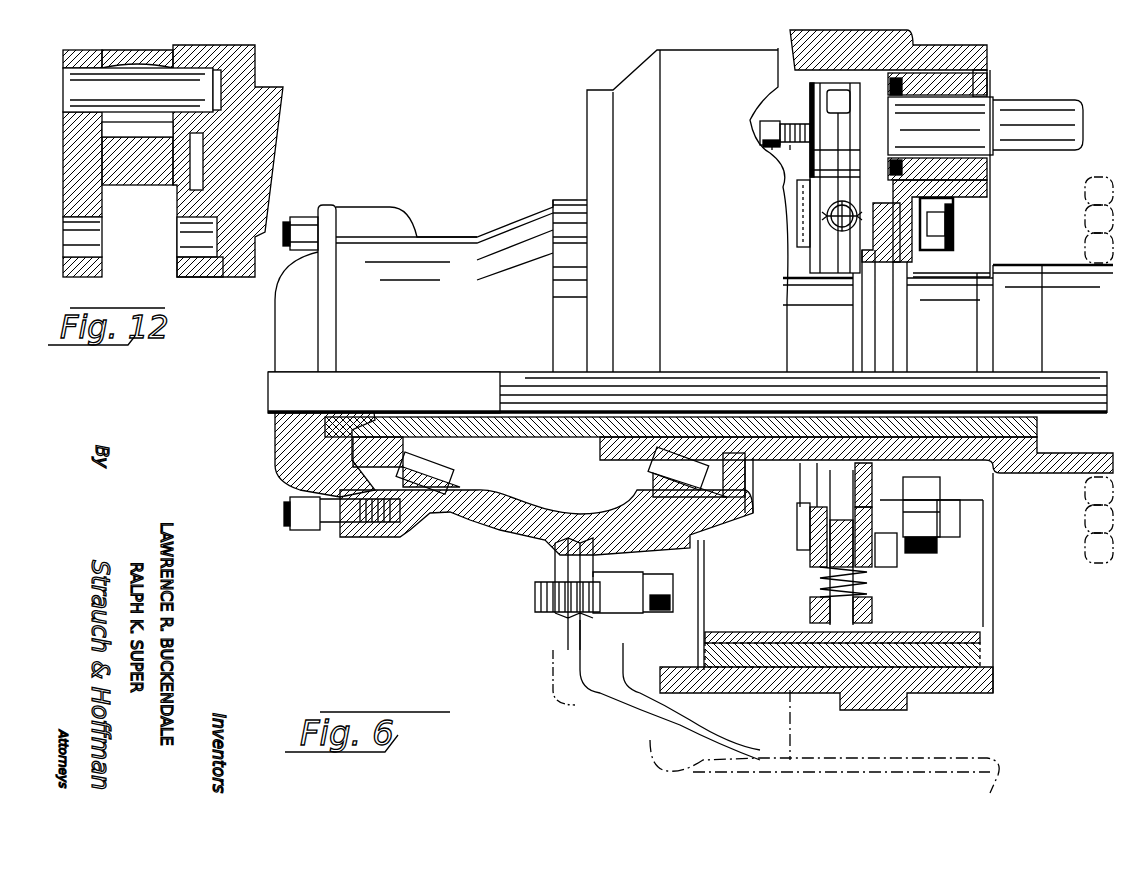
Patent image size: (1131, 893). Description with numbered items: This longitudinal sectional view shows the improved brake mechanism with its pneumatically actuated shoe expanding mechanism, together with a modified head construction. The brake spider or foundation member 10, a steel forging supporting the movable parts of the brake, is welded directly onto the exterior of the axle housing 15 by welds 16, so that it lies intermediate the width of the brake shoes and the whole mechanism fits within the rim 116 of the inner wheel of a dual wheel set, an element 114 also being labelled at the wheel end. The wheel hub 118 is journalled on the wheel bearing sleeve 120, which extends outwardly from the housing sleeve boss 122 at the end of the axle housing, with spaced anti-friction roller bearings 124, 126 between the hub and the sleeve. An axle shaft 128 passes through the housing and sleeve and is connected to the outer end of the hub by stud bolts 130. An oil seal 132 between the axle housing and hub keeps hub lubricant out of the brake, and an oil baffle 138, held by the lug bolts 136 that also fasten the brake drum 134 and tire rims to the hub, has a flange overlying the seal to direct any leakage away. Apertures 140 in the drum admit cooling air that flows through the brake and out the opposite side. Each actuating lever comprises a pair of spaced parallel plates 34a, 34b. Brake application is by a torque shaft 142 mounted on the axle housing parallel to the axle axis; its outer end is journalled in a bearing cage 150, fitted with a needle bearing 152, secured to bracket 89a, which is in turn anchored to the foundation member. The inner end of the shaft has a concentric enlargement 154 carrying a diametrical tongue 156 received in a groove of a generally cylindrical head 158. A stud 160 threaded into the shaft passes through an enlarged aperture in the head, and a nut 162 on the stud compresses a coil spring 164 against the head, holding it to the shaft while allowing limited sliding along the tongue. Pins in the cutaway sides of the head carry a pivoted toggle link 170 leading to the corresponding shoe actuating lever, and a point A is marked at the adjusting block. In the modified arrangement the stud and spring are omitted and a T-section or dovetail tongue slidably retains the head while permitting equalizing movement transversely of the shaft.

In FIG. 6, the foundation member 10 is at (885, 568).
In FIG. 6, the axle housing 15 is at (1050, 474).
In FIG. 6, the welds 16 is at (860, 342).
In FIG. 6, the lever plate 34a is at (810, 608).
In FIG. 6, the lever plate 34b is at (873, 607).
In FIG. 6, the bracket 89a is at (943, 204).
In FIG. 6, the wheel hub 114 is at (1027, 272).
In FIG. 6, the rim 116 is at (838, 768).
In FIG. 6, the wheel hub 118 is at (515, 527).
In FIG. 6, the wheel bearing sleeve 120 is at (542, 438).
In FIG. 6, the housing sleeve boss 122 is at (793, 490).
In FIG. 6, the roller bearing 124 is at (652, 456).
In FIG. 6, the roller bearing 126 is at (408, 473).
In FIG. 6, the axle shaft 128 is at (288, 362).
In FIG. 6, the stud bolts 130 is at (782, 58).
In FIG. 6, the oil seal 132 is at (747, 502).
In FIG. 6, the brake drum 134 is at (672, 720).
In FIG. 6, the lug bolts 136 is at (547, 617).
In FIG. 6, the oil baffle 138 is at (728, 528).
In FIG. 6, the apertures 140 is at (640, 657).
In FIG. 12, the torque shaft 142 is at (318, 90).
In FIG. 6, the torque shaft 142 is at (1078, 76).
In FIG. 6, the bearing cage 150 is at (978, 70).
In FIG. 6, the needle bearing 152 is at (986, 84).
In FIG. 12, the concentric enlargement 154 is at (250, 265).
In FIG. 6, the concentric enlargement 154 is at (908, 42).
In FIG. 12, the tongue 156 is at (178, 183).
In FIG. 6, the tongue 156 is at (855, 132).
In FIG. 12, the head 158 is at (176, 245).
In FIG. 6, the head 158 is at (858, 85).
In FIG. 6, the stud 160 is at (758, 130).
In FIG. 6, the nut 162 is at (772, 153).
In FIG. 6, the coil spring 164 is at (787, 153).
In FIG. 6, the toggle link 170 is at (835, 90).
In FIG. 6, the adjusting block A is at (893, 558).